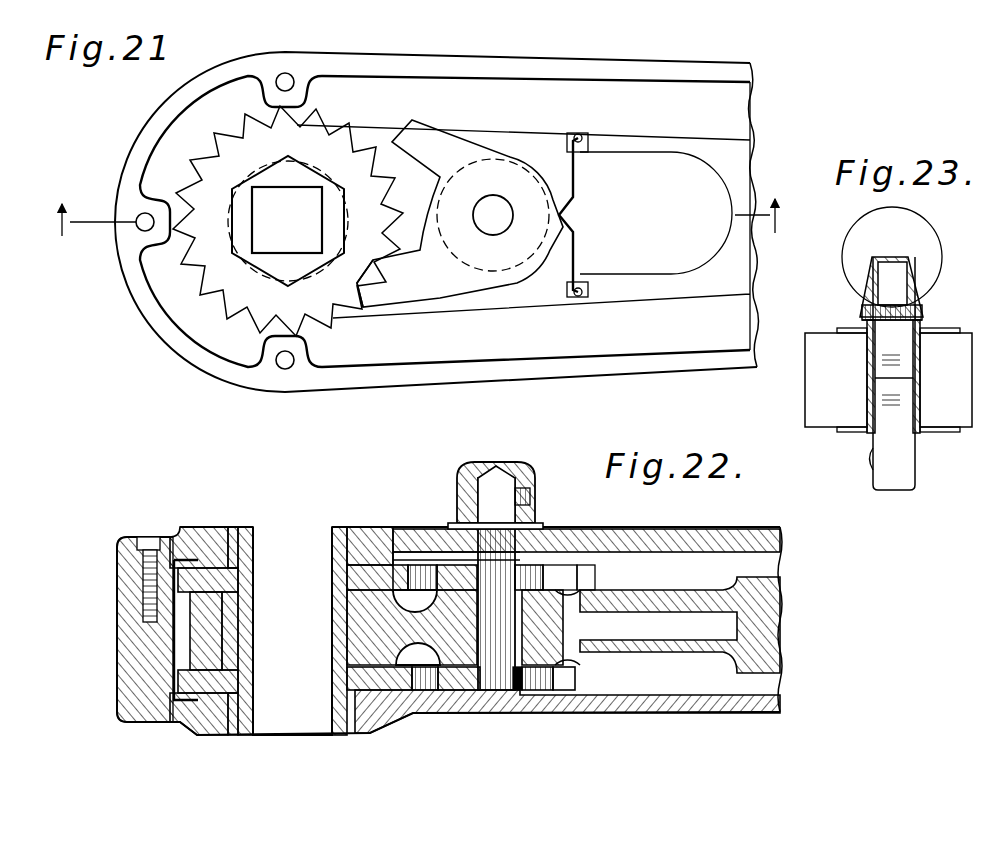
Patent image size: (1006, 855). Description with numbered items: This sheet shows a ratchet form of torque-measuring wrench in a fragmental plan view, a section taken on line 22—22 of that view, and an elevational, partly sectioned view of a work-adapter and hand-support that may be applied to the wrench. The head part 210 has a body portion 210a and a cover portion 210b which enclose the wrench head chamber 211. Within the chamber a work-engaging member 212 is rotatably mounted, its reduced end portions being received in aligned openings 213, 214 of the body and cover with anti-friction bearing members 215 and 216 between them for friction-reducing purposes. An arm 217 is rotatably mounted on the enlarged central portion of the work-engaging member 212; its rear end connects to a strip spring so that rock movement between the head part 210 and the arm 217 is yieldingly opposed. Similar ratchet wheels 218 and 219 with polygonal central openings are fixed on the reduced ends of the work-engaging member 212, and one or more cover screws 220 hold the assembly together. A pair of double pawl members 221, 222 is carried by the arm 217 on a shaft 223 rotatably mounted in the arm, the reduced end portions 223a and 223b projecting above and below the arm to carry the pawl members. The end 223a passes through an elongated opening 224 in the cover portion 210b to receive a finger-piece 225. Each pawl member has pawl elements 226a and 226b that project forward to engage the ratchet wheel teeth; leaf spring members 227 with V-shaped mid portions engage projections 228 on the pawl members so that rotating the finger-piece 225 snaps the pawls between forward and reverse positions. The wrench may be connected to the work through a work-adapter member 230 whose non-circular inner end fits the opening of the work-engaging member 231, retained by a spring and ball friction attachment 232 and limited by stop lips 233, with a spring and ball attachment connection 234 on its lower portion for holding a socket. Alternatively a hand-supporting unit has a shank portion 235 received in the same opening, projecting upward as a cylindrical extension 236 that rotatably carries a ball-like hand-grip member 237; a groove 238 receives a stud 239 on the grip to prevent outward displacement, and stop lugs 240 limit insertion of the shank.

In FIG. 21, the section line 22— 22 is at (420, 218).
In FIG. 21, the head part 210 is at (527, 53).
In FIG. 21, the body portion 210a is at (380, 40).
In FIG. 22, the body portion 210a is at (137, 707).
In FIG. 22, the cover portion 210b is at (195, 527).
In FIG. 21, the wrench head chamber 211 is at (592, 88).
In FIG. 21, the work-engaging member 212 is at (240, 190).
In FIG. 22, the work-engaging member 212 is at (340, 527).
In FIG. 22, the opening 213 is at (360, 530).
In FIG. 22, the opening 214 is at (223, 722).
In FIG. 21, the anti-friction bearing member 215 is at (235, 285).
In FIG. 22, the anti-friction bearing member 215 is at (232, 527).
In FIG. 22, the anti-friction bearing member 216 is at (240, 726).
In FIG. 21, the arm 217 is at (748, 156).
In FIG. 22, the arm 217 is at (782, 608).
In FIG. 21, the ratchet wheel 218 is at (322, 130).
In FIG. 22, the ratchet wheel 218 is at (180, 548).
In FIG. 22, the ratchet wheel 219 is at (185, 697).
In FIG. 22, the cover screw 220 is at (117, 590).
In FIG. 21, the pawl member 221 is at (505, 170).
In FIG. 22, the pawl member 221 is at (442, 565).
In FIG. 22, the pawl member 222 is at (456, 683).
In FIG. 21, the shaft 223 is at (496, 226).
In FIG. 22, the shaft 223 is at (518, 692).
In FIG. 22, the reduced end portion 223a is at (486, 492).
In FIG. 22, the reduced end portion 223b is at (575, 677).
In FIG. 22, the elongated opening 224 is at (524, 540).
In FIG. 22, the finger-piece 225 is at (532, 472).
In FIG. 21, the pawl element 226a is at (418, 122).
In FIG. 22, the pawl element 226a is at (415, 568).
In FIG. 21, the pawl element 226b is at (392, 295).
In FIG. 21, the leaf spring member 227 is at (581, 187).
In FIG. 21, the projection 228 is at (584, 240).
In FIG. 23, the work-adapter member 230 is at (905, 454).
In FIG. 23, the work-engaging member 231 is at (918, 349).
In FIG. 23, the spring and ball friction attachment 232 is at (880, 409).
In FIG. 23, the stop lip 233 is at (870, 436).
In FIG. 23, the spring and ball attachment connection 234 is at (873, 456).
In FIG. 23, the shank portion 235 is at (870, 345).
In FIG. 23, the cylindrical extension 236 is at (912, 272).
In FIG. 23, the hand-grip member 237 is at (925, 237).
In FIG. 23, the groove 238 is at (922, 311).
In FIG. 23, the stud 239 is at (865, 318).
In FIG. 23, the stop lug 240 is at (867, 326).